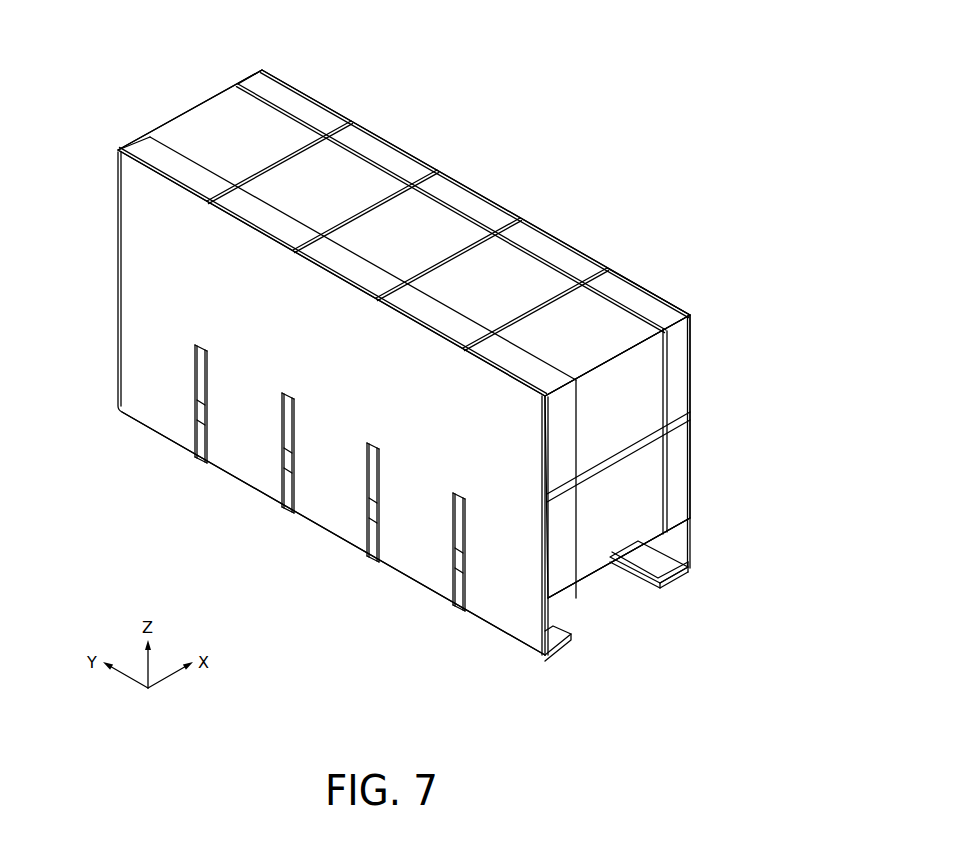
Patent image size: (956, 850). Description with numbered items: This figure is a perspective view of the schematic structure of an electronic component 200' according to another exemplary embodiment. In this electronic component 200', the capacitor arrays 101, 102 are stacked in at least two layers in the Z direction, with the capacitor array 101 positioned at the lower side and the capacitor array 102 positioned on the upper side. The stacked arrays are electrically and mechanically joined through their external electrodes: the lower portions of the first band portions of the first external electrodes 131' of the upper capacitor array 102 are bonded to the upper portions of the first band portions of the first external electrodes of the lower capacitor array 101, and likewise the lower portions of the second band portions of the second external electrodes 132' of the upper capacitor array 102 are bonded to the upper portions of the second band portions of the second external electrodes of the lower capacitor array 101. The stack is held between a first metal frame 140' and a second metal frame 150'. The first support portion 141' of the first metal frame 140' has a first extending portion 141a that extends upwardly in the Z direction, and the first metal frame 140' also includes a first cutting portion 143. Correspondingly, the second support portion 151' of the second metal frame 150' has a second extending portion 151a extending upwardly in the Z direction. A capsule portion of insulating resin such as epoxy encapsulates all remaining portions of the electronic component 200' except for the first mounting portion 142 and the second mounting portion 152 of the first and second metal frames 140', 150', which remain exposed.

The electronic component 200' is at (404, 308).
The capacitor array 101 is at (702, 470).
The capacitor array 102 is at (168, 113).
The first external electrode 131' is at (333, 345).
The second external electrode 132' is at (453, 298).
The first metal frame 140' is at (333, 550).
The first support portion 141' is at (371, 418).
The first extending portion 141a is at (443, 410).
The first mounting portion 142 is at (518, 642).
The first cutting portion 143 is at (452, 566).
The second metal frame 150' is at (655, 597).
The second support portion 151' is at (664, 505).
The second extending portion 151a is at (670, 302).
The second mounting portion 152 is at (690, 572).